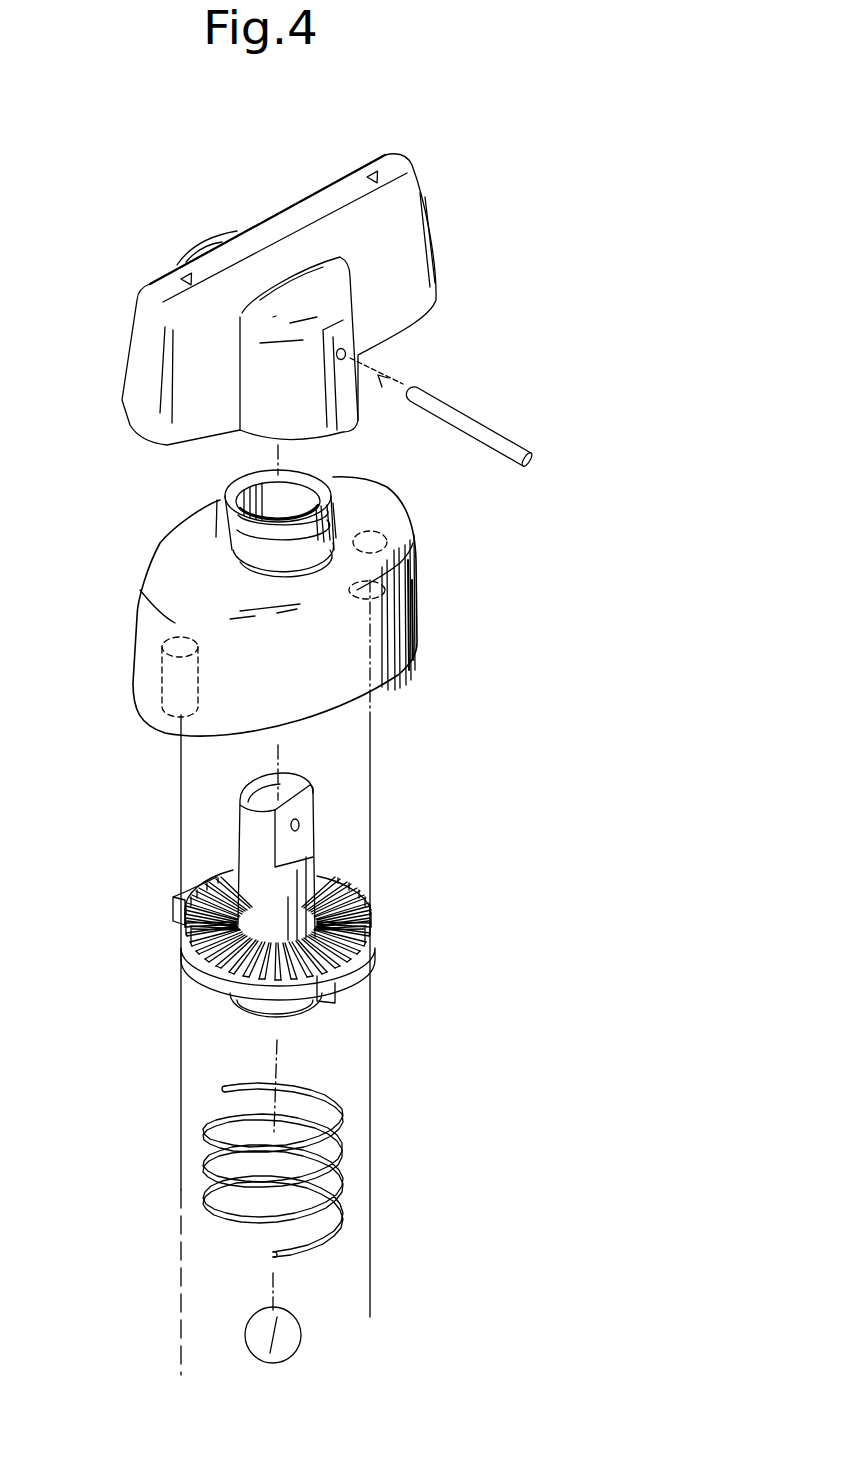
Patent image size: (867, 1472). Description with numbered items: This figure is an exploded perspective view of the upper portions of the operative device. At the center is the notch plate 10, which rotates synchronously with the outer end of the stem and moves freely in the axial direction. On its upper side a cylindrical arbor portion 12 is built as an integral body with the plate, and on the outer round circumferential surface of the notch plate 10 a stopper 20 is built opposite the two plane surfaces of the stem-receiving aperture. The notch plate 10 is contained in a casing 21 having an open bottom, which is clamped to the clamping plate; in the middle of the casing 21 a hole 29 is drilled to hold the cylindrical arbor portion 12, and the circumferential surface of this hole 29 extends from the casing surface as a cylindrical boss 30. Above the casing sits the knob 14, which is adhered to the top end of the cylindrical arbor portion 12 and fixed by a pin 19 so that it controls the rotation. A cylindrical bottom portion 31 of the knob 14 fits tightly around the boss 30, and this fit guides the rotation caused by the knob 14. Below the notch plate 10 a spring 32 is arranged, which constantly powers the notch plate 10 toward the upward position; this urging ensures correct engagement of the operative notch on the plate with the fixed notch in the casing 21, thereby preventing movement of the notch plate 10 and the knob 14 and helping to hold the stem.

The knob 14 is at (390, 230).
The cylindrical bottom portion 31 is at (263, 387).
The pin 19 is at (457, 412).
The cylindrical boss 30 is at (220, 500).
The hole 29 is at (297, 495).
The casing 21 is at (393, 605).
The cylindrical arbor portion 12 is at (250, 830).
The notch plate 10 is at (203, 967).
The stopper 20 is at (343, 997).
The spring 32 is at (340, 1146).